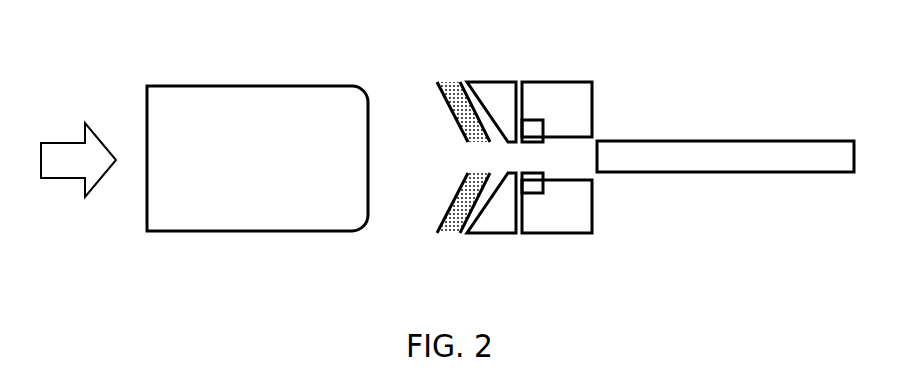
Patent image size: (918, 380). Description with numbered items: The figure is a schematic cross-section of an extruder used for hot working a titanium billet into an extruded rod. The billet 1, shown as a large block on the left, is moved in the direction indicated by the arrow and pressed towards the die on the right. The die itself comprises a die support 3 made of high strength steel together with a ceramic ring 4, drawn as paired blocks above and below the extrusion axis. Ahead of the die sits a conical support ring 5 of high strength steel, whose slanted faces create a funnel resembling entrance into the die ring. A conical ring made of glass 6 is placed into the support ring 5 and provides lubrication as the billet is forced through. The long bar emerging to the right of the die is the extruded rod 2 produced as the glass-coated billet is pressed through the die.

The billet 1 is at (275, 221).
The light guide plate 2 is at (730, 172).
The die support 3 is at (565, 233).
The ceramic ring 4 is at (546, 82).
The conical support ring 5 is at (502, 233).
The conical ring made of glass 6 is at (458, 82).